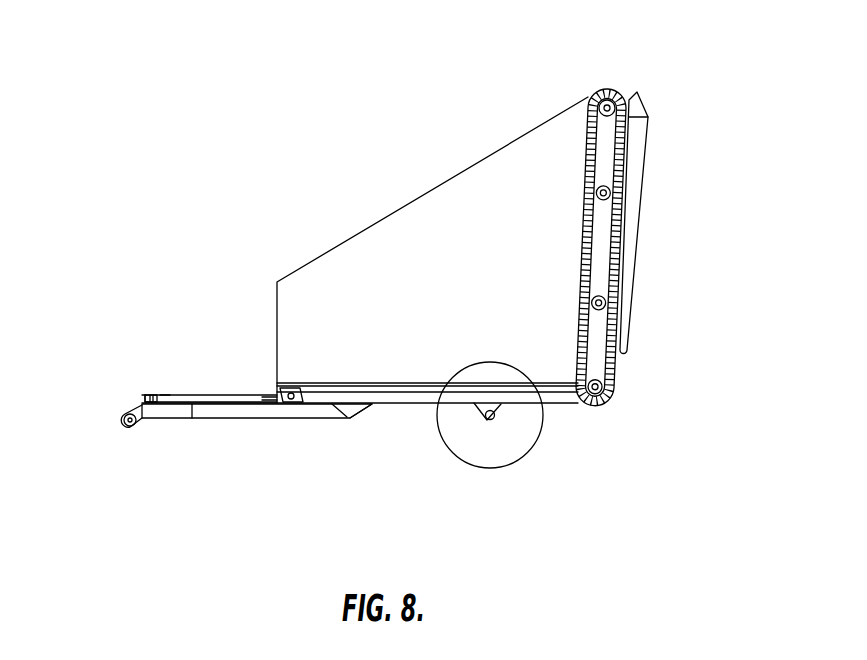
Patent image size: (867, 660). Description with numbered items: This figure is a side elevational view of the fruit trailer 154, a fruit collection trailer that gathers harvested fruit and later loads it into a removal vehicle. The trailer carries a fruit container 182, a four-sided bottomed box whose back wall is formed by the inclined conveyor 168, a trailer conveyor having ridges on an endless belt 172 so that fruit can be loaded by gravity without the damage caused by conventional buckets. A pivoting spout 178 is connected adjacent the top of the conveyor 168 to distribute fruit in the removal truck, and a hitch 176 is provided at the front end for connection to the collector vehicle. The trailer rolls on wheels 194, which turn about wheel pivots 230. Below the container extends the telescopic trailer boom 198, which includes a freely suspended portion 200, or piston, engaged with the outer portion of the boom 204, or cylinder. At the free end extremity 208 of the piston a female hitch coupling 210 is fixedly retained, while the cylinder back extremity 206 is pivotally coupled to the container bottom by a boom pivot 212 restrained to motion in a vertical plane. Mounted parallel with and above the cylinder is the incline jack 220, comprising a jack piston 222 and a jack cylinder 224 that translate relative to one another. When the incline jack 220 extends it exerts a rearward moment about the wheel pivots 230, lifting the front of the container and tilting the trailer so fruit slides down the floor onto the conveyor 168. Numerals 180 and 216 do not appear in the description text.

The fruit trailer 154 is at (714, 57).
The inclined conveyor 168 is at (633, 159).
The endless belt 172 is at (606, 270).
The hitch 176 is at (140, 393).
The pivoting spout 178 is at (640, 200).
The upper sprocket 180 is at (578, 70).
The fruit container 182 is at (253, 284).
The wheels 194 is at (537, 425).
The trailer boom 198 is at (168, 446).
The freely suspended portion 200 is at (182, 410).
The outer portion of the boom 204 is at (273, 408).
The cylinder back extremity 206 is at (322, 412).
The free end extremity 208 is at (148, 423).
The female hitch coupling 210 is at (140, 403).
The boom pivot 212 is at (353, 408).
The slide rail 216 is at (187, 375).
The incline jack 220 is at (211, 380).
The jack piston 222 is at (262, 402).
The jack cylinder 224 is at (167, 395).
The wheel pivots 230 is at (605, 403).